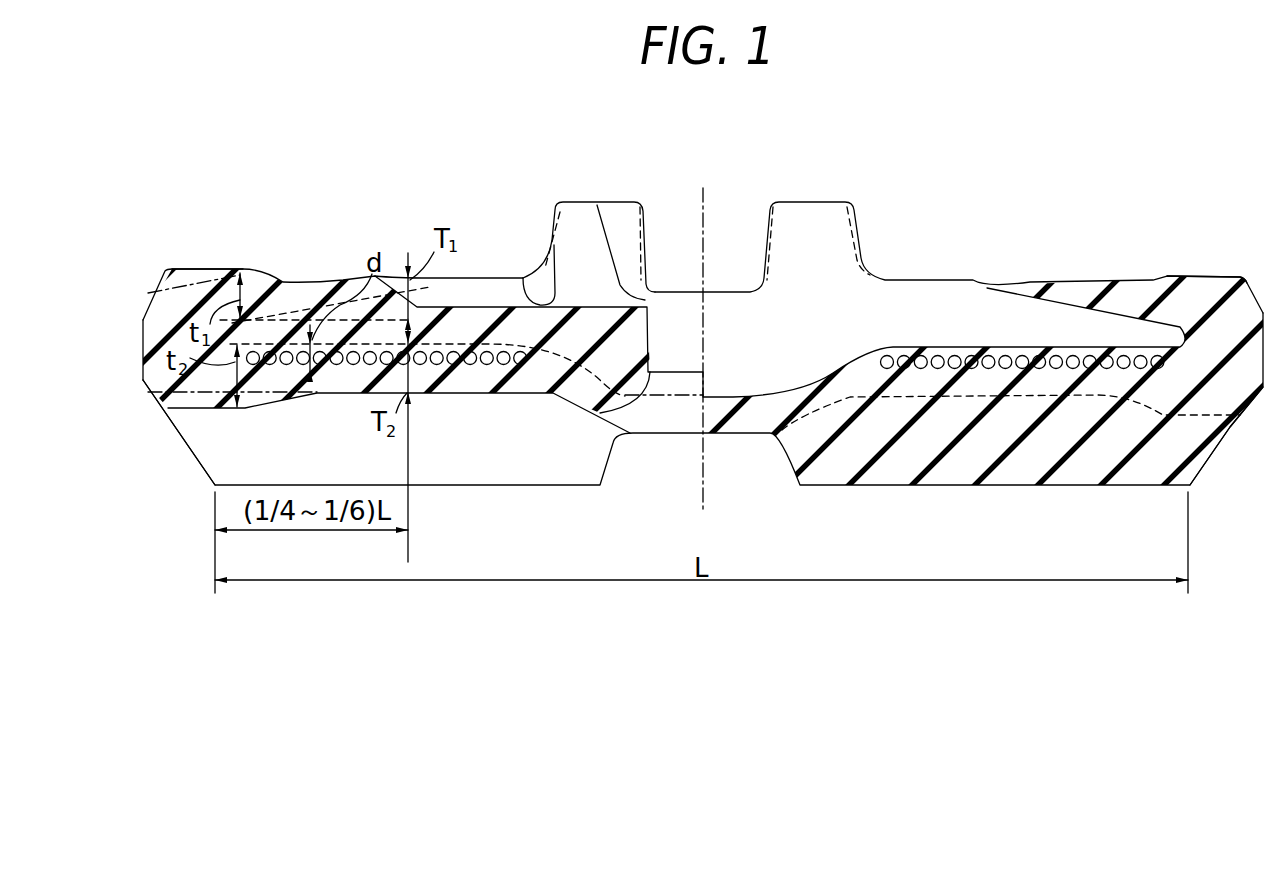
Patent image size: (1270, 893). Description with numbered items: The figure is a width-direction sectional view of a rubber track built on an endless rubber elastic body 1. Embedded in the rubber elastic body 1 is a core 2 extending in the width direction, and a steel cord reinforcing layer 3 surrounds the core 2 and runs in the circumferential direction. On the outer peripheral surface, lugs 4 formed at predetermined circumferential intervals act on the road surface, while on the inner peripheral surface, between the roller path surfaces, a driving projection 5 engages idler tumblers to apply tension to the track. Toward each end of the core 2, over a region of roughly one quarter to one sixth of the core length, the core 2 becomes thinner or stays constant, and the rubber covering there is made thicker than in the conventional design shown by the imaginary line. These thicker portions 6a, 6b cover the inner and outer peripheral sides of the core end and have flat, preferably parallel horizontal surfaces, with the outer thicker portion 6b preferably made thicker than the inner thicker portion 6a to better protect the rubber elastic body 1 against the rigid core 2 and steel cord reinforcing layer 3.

The rubber elastic body 1 is at (486, 388).
The core 2 is at (843, 330).
The steel cord reinforcing layer 3 is at (436, 366).
The lug 4 is at (466, 458).
The driving projection 5 is at (580, 232).
The thicker portion 6a is at (193, 268).
The thicker portion 6b is at (207, 412).